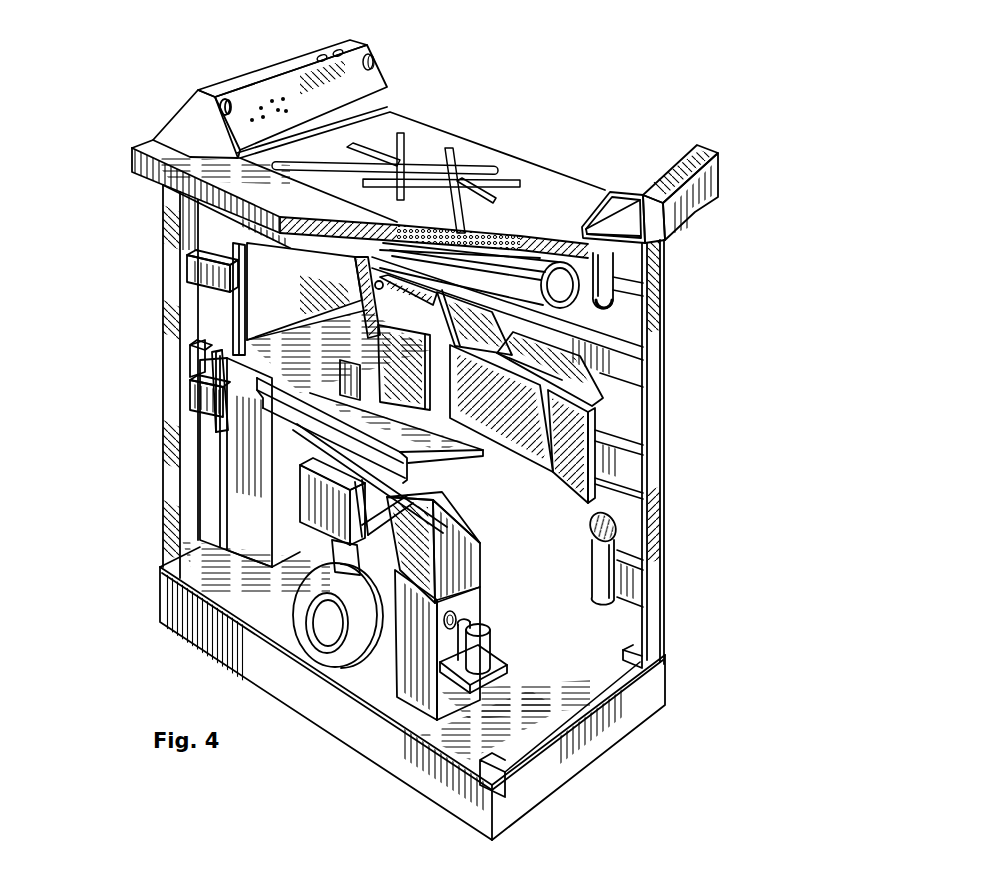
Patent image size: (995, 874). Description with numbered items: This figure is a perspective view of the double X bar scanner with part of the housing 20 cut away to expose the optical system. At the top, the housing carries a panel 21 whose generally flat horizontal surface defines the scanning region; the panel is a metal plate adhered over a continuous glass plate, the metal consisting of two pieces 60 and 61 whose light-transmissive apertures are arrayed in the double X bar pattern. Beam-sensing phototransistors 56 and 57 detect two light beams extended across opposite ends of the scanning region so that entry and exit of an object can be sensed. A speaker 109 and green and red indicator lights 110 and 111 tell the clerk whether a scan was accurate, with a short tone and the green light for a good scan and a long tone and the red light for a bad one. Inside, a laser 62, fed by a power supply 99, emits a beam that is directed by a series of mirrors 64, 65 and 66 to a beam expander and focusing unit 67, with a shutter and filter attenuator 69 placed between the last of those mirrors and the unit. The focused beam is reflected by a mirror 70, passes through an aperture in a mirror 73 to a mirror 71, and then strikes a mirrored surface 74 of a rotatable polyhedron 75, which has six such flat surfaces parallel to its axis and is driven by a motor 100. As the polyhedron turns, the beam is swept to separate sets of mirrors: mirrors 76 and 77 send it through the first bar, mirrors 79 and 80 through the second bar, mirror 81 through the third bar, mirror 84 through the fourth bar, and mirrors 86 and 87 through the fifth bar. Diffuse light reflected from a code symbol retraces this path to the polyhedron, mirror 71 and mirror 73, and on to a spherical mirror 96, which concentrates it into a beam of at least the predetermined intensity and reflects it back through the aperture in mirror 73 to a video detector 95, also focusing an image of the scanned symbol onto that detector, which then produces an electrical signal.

The housing 20 is at (126, 149).
The panel 21 is at (560, 165).
The phototransistor 56 is at (220, 107).
The phototransistor 57 is at (373, 63).
The metal plate piece 60 is at (465, 152).
The metal plate piece 61 is at (432, 166).
The laser 62 is at (565, 282).
The mirror 64 is at (613, 312).
The mirror 65 is at (616, 524).
The mirror 66 is at (480, 623).
The beam expander and focusing unit 67 is at (470, 617).
The shutter and filter attenuator 69 is at (462, 633).
The mirror 70 is at (353, 558).
The mirror 71 is at (447, 458).
The mirror 73 is at (435, 503).
The mirrored surface 74 is at (463, 527).
The rotatable polyhedron 75 is at (483, 570).
The mirror 76 is at (473, 333).
The mirror 77 is at (303, 292).
The mirror 79 is at (403, 306).
The mirror 80 is at (220, 418).
The mirror 81 is at (590, 395).
The mirror 84 is at (573, 472).
The mirror 86 is at (387, 363).
The mirror 87 is at (237, 317).
The video detector 95 is at (305, 495).
The spherical mirror 96 is at (522, 433).
The power supply 99 is at (230, 467).
The motor 100 is at (300, 587).
The speaker 109 is at (267, 100).
The green indicator light 110 is at (322, 57).
The red indicator light 111 is at (340, 52).